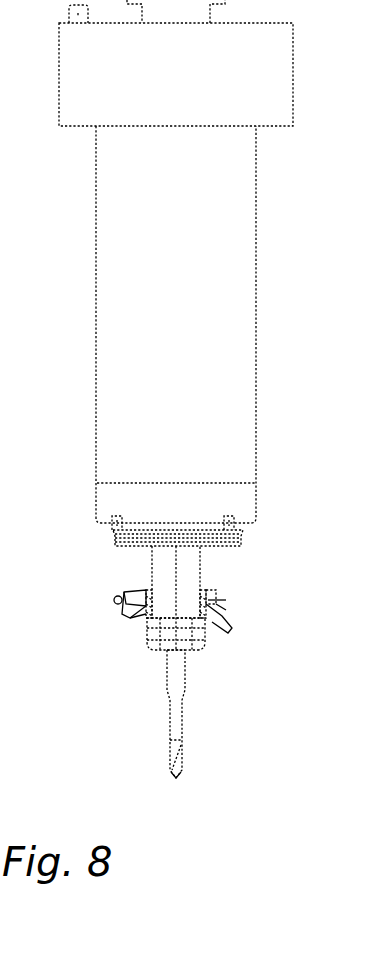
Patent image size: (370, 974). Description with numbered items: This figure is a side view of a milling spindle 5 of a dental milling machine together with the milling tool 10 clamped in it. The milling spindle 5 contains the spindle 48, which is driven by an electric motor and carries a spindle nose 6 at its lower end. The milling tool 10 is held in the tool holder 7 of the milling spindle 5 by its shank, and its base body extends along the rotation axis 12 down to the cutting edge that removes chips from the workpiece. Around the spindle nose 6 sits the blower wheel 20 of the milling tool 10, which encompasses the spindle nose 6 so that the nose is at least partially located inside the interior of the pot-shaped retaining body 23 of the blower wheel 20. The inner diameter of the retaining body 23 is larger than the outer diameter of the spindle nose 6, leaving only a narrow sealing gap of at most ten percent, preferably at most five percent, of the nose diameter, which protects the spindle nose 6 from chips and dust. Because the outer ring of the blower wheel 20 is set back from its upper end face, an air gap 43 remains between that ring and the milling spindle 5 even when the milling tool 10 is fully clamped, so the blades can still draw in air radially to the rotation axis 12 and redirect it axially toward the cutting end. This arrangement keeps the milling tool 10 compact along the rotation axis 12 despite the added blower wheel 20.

The milling spindle 5 is at (257, 267).
The spindle 48 is at (200, 572).
The air gap 43 is at (245, 545).
The retaining body 23 is at (226, 617).
The blower wheel 20 is at (146, 594).
The spindle nose 6 is at (148, 636).
The tool holder 7 is at (203, 630).
The milling tool 10 is at (132, 732).
The rotation axis 12 is at (176, 785).